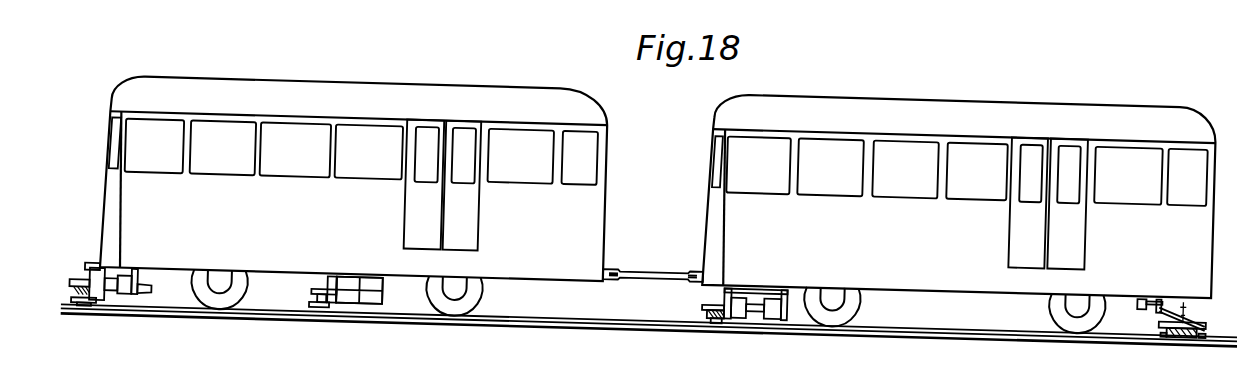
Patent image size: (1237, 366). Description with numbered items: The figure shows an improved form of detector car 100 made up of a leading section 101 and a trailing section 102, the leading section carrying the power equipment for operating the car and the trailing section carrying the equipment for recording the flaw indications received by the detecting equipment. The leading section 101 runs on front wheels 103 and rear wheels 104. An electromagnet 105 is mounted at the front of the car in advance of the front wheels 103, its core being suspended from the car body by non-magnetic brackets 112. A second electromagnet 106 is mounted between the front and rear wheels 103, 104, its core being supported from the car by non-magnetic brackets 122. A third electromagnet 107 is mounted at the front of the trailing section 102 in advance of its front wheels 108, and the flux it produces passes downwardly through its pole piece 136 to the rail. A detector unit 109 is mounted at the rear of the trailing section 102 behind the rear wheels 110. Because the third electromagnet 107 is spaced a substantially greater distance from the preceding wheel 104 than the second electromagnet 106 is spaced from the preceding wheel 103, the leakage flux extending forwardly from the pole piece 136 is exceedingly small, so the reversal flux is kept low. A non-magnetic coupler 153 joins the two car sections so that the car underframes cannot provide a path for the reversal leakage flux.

The detector car 100 is at (711, 114).
The leading section 101 is at (403, 68).
The trailing section 102 is at (1022, 84).
The front wheels 103 is at (225, 302).
The rear wheels 104 is at (473, 296).
The electromagnet 105 is at (113, 300).
The second electromagnet 106 is at (353, 307).
The third electromagnet 107 is at (752, 294).
The front wheels 108 is at (857, 306).
The detector unit 109 is at (1156, 324).
The rear wheels 110 is at (1050, 315).
The non-magnetic brackets 112 is at (88, 266).
The non-magnetic brackets 122 is at (379, 291).
The pole piece 136 is at (716, 324).
The non-magnetic coupler 153 is at (660, 279).